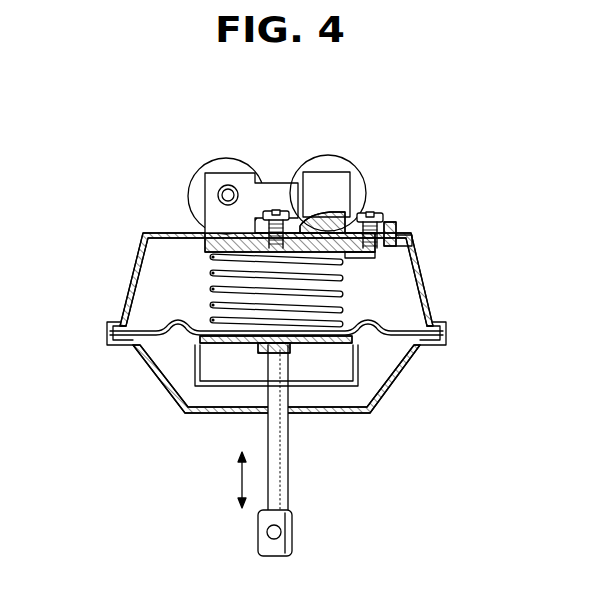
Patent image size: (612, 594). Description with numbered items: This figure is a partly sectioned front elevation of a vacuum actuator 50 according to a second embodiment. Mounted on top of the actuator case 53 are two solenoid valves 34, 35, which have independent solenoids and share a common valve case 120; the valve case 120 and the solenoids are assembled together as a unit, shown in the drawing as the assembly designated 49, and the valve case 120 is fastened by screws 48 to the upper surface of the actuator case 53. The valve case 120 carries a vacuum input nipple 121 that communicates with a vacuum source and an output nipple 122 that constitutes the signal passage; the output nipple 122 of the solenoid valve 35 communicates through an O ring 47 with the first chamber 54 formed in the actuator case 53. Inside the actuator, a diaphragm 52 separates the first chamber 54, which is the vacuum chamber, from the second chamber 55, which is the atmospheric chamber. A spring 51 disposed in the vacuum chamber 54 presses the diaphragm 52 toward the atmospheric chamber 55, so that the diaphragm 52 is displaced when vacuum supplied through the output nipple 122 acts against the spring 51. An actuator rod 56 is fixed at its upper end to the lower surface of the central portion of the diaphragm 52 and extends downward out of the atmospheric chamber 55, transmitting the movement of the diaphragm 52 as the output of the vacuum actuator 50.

The solenoid valve 34 is at (243, 170).
The solenoid valve 35 is at (340, 172).
The O ring 47 is at (338, 284).
The screws 48 is at (268, 208).
The pivot assembly 49 is at (324, 154).
The vacuum actuator 50 is at (133, 280).
The spring 51 is at (212, 290).
The diaphragm 52 is at (355, 323).
The actuator case 53 is at (168, 233).
The first chamber 54 is at (387, 292).
The second chamber 55 is at (372, 380).
The actuator rod 56 is at (282, 492).
The valve case 120 is at (345, 185).
The vacuum input nipple 121 is at (220, 186).
The output nipple 122 is at (340, 262).